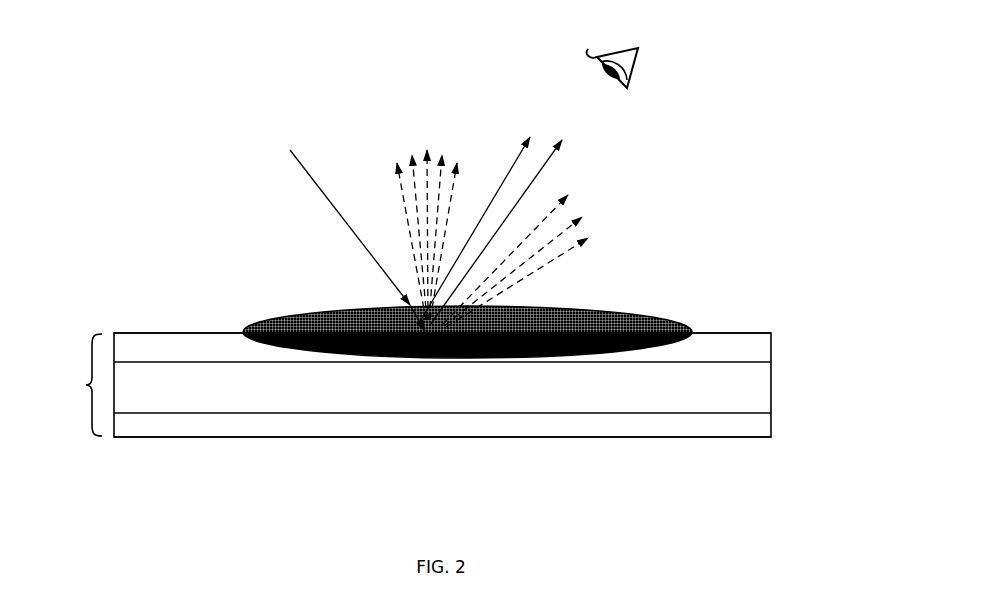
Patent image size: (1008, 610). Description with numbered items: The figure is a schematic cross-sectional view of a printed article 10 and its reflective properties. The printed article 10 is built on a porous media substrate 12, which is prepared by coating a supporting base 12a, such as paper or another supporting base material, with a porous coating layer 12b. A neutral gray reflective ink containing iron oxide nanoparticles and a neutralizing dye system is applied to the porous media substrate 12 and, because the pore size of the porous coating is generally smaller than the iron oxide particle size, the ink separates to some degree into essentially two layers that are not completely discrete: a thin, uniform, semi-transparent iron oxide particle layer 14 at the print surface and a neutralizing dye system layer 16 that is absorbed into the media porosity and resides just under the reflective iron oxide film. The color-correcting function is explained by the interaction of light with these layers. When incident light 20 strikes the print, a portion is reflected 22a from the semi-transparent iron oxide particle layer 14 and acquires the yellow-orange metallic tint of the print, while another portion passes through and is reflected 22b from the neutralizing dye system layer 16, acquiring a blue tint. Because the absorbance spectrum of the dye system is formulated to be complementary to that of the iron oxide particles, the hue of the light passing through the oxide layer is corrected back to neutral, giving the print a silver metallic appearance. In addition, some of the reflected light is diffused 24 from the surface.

The printed article 10 is at (140, 270).
The porous media substrate 12 is at (411, 385).
The supporting base 12a is at (752, 388).
The porous coating layer 12b is at (218, 340).
The iron oxide particle layer 14 is at (663, 318).
The neutralizing dye system layer 16 is at (622, 330).
The incident light 20 is at (344, 230).
The light reflected from iron oxide layer 22a is at (480, 215).
The light reflected from neutralizing dye system layer 22b is at (519, 224).
The diffused reflected light 24 is at (505, 229).